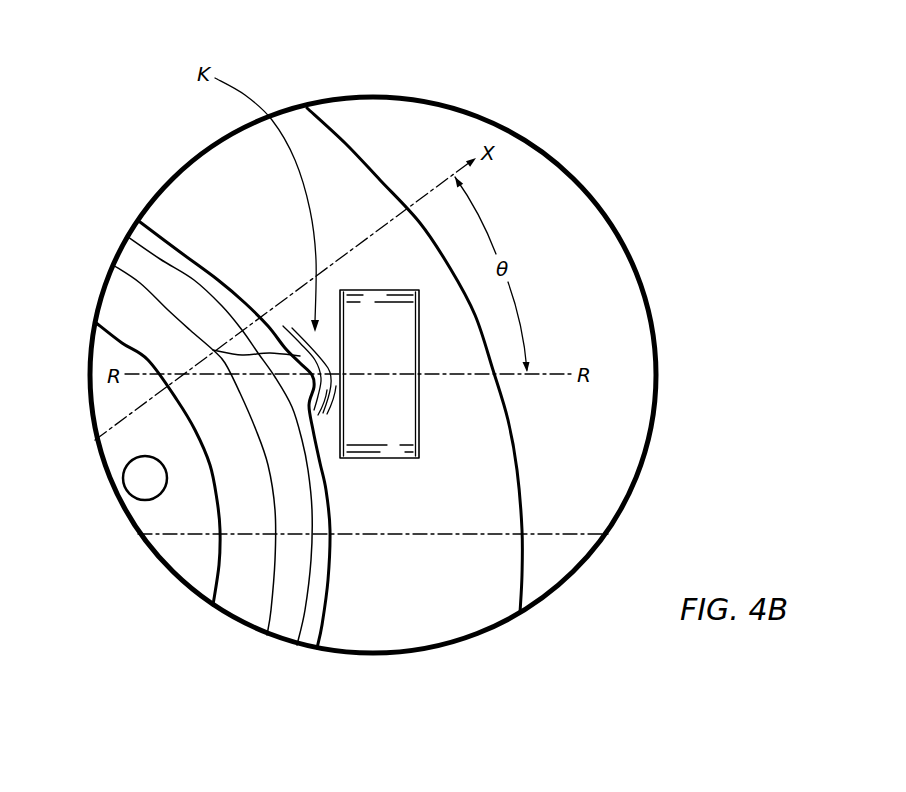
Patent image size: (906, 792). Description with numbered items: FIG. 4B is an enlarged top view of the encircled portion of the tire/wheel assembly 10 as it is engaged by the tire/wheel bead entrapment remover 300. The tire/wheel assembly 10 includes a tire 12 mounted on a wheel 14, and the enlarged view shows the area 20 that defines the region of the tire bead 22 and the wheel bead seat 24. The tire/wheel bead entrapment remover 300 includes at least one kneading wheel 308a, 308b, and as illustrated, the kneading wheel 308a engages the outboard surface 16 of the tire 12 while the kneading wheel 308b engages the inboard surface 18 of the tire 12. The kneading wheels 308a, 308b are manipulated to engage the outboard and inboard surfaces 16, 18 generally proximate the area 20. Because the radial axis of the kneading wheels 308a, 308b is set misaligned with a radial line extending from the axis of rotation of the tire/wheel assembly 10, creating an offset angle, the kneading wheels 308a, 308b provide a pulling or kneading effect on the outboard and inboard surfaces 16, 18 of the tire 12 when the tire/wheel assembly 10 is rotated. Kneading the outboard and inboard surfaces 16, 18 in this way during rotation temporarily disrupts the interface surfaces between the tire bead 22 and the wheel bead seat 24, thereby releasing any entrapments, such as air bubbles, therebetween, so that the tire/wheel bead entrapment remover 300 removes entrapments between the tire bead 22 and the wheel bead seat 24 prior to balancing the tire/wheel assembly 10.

The tire/wheel assembly 10 is at (531, 449).
The tire 12 is at (353, 141).
The wheel 14 is at (132, 258).
The outboard surface 16 is at (205, 376).
The inboard surface 18 is at (220, 165).
The area 20 is at (288, 398).
The tire bead 22 is at (296, 360).
The wheel bead seat 24 is at (213, 350).
The tire/wheel bead entrapment remover 300 is at (691, 74).
The kneading wheel 308a is at (423, 393).
The kneading wheel 308b is at (420, 456).